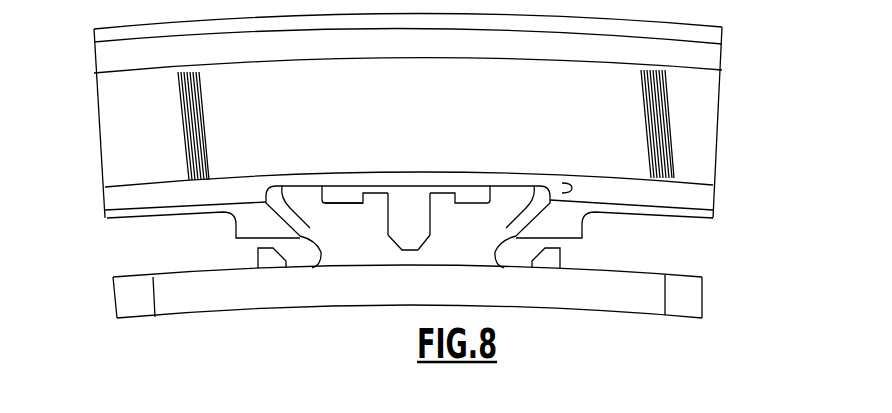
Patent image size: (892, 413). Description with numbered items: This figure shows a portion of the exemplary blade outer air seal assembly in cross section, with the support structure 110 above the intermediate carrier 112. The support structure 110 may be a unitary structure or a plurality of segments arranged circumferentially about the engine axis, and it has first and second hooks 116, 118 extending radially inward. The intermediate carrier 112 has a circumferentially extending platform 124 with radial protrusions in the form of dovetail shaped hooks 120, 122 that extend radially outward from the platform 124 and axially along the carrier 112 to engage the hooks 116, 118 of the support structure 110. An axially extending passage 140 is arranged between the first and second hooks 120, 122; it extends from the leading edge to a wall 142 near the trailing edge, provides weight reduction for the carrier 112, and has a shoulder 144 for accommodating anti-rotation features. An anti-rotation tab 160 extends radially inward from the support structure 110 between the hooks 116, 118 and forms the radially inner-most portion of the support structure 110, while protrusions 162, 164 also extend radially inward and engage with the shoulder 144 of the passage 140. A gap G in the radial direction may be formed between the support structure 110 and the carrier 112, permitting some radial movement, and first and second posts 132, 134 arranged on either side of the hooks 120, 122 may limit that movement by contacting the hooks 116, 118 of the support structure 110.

The support structure 110 is at (698, 94).
The intermediate carrier 112 is at (445, 310).
The first hook 116 is at (260, 223).
The second hook 118 is at (553, 222).
The first hook 120 is at (396, 233).
The second hook 122 is at (522, 200).
The platform 124 is at (612, 300).
The first post 132 is at (270, 252).
The second post 134 is at (553, 255).
The passage 140 is at (384, 256).
The wall 142 is at (442, 227).
The shoulder 144 is at (350, 204).
The anti-rotation tab 160 is at (410, 231).
The protrusion 162 is at (350, 195).
The protrusion 164 is at (465, 190).
The gap G is at (578, 183).